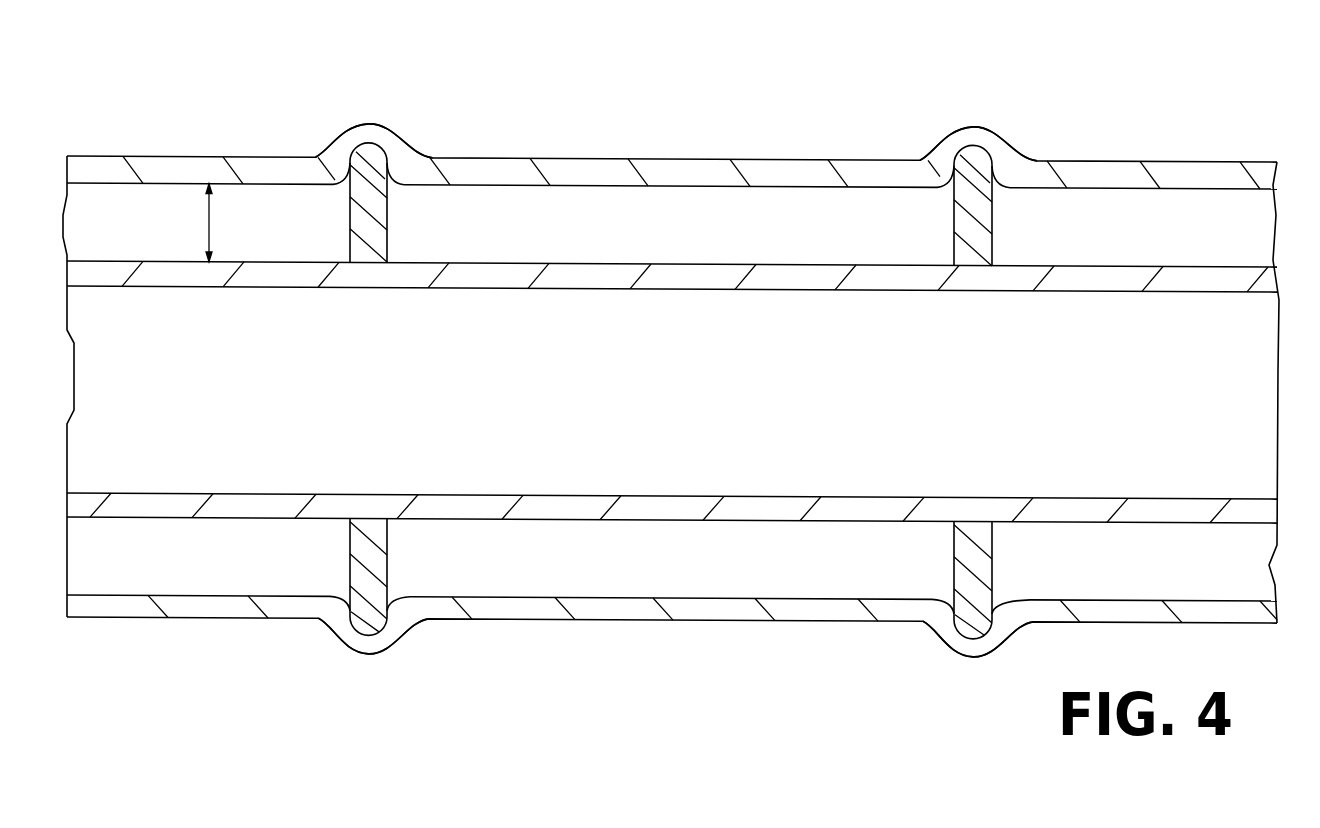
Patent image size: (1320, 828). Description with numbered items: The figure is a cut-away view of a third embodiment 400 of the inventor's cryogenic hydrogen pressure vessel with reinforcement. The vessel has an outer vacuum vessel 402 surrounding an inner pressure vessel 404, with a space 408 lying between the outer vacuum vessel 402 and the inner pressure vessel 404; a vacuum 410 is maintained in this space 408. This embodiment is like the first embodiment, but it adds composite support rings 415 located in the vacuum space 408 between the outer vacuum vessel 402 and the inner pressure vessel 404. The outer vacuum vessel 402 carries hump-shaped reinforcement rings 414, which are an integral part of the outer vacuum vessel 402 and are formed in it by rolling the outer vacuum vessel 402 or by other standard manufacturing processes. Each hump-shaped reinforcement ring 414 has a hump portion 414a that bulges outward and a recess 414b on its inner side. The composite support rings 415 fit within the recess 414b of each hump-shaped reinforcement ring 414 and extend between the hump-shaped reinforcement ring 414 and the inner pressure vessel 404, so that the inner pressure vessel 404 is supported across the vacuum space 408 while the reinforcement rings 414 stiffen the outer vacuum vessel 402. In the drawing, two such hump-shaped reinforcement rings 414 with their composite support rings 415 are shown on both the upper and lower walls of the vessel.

The third embodiment of cryogenic pressure vessel with reinforcement 400 is at (1132, 56).
The outer vacuum vessel 402 is at (1171, 161).
The inner pressure vessel 404 is at (1126, 291).
The space between outer vacuum vessel and inner pressure vessel 408 is at (207, 220).
The vacuum 410 is at (637, 240).
The hump-shaped reinforcement rings 414 is at (440, 108).
The hump portion 414a is at (387, 126).
The recess 414b is at (355, 149).
The composite support rings 415 is at (389, 232).